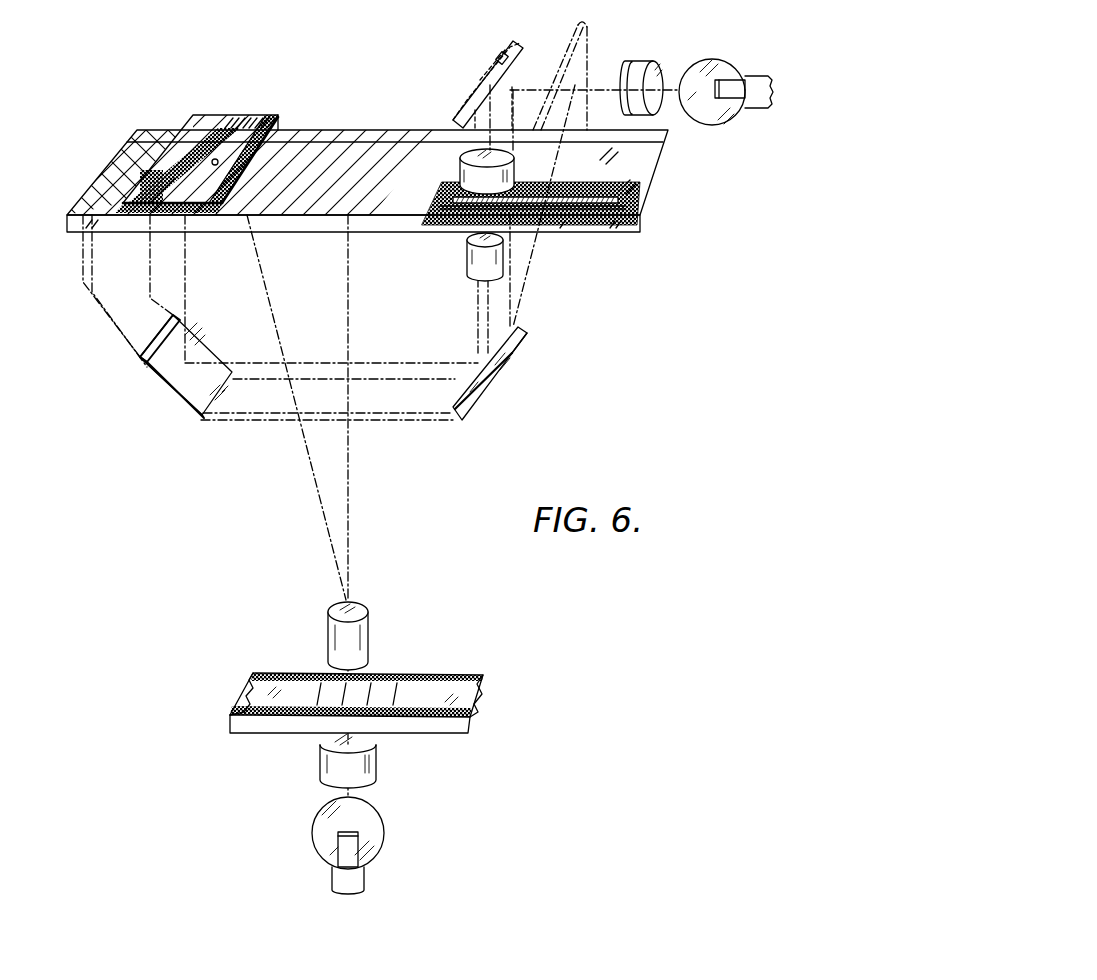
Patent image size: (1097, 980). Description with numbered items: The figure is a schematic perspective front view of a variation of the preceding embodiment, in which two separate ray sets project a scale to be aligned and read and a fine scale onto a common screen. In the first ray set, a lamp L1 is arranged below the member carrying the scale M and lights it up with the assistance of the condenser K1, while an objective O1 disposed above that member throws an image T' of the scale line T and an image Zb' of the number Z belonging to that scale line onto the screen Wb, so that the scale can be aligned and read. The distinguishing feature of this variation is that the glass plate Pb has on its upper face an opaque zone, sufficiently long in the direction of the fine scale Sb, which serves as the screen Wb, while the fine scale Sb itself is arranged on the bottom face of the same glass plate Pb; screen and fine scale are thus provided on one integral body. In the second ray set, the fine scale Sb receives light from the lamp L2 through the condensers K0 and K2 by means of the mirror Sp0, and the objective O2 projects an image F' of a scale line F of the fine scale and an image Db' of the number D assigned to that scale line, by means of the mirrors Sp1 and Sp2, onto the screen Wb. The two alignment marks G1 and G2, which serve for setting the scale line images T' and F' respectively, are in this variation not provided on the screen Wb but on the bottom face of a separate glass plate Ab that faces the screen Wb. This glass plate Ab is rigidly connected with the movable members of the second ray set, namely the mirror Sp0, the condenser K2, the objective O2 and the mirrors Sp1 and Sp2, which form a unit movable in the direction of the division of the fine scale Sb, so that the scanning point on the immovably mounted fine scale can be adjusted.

The glass plate Pb is at (52, 223).
The screen Wb is at (148, 130).
The glass plate Ab is at (213, 115).
The alignment mark G1 is at (247, 160).
The scale line image T' is at (195, 144).
The alignment mark G2 is at (190, 207).
The scale line image F' is at (177, 222).
The number image Zb' is at (125, 163).
The number image Db' is at (118, 190).
The fine scale Sb is at (637, 190).
The scale line F is at (573, 201).
The number D is at (610, 208).
The condenser K2 is at (466, 156).
The mirror Sp0 is at (486, 72).
The objective O2 is at (470, 265).
The condenser K0 is at (638, 62).
The lamp L2 is at (712, 60).
The mirror Sp2 is at (157, 365).
The mirror Sp1 is at (512, 362).
The objective O1 is at (330, 650).
The scale M is at (467, 730).
The number Z is at (395, 700).
The scale line T is at (426, 671).
The condenser K1 is at (323, 763).
The lamp L1 is at (313, 831).